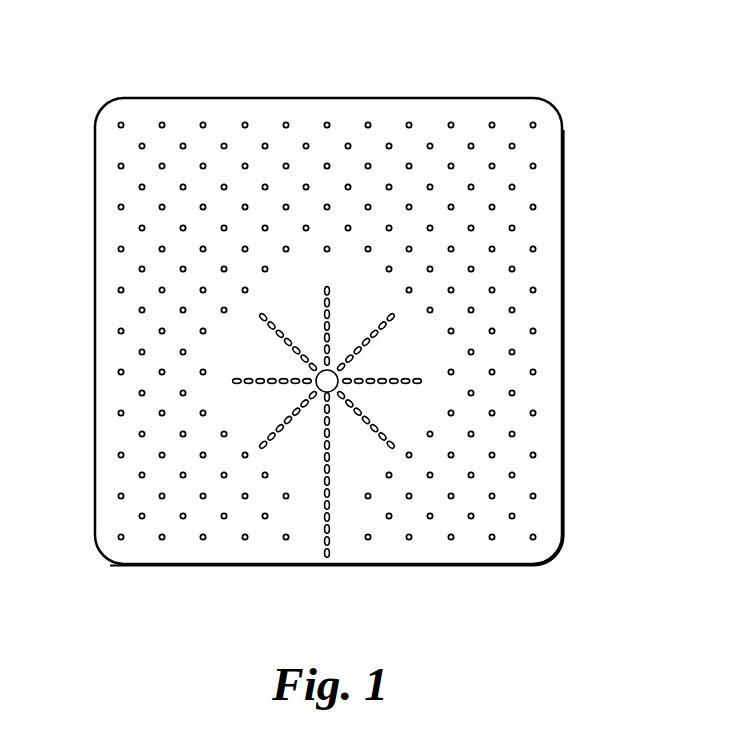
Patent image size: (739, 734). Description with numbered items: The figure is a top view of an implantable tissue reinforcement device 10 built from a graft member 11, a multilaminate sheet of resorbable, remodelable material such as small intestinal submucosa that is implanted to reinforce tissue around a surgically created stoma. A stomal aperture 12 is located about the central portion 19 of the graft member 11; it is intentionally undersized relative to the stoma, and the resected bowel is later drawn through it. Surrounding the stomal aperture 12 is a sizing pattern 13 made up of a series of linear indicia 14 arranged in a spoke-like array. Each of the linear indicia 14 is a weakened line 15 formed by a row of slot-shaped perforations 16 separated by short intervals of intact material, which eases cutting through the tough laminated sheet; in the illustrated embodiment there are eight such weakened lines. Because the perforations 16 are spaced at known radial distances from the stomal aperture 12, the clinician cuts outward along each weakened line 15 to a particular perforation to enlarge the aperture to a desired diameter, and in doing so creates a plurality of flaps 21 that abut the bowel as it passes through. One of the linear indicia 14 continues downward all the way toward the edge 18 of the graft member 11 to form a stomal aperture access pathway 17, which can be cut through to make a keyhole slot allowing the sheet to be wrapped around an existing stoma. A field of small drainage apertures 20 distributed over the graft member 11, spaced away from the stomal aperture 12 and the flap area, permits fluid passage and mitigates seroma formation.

The implantable tissue reinforcement device 10 is at (588, 100).
The graft member 11 is at (537, 188).
The stomal aperture 12 is at (325, 378).
The sizing pattern 13 is at (374, 452).
The linear indicia 14 is at (350, 424).
The weakened line 15 is at (251, 462).
The perforation 16 is at (247, 383).
The stomal aperture access pathway 17 is at (318, 508).
The edge 18 is at (158, 565).
The central portion 19 is at (227, 352).
The drainage aperture 20 is at (121, 497).
The flap 21 is at (381, 355).